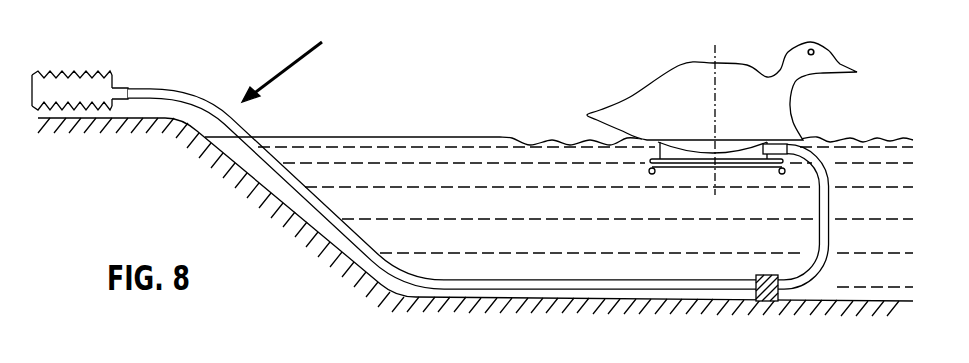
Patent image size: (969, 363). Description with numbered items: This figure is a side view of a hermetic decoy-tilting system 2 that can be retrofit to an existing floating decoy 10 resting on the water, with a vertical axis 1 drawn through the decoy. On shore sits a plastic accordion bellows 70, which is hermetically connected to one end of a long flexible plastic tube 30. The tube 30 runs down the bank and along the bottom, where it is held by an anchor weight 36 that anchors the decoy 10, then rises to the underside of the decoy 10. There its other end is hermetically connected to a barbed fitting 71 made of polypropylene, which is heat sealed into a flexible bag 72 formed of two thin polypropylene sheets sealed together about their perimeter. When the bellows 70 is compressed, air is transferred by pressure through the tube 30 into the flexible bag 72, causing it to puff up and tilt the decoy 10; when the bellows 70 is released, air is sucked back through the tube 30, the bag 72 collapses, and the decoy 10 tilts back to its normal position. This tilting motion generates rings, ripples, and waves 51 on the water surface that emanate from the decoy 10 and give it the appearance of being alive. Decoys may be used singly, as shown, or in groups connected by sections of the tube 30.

The vertical axis of decoy 1 is at (714, 122).
The hermetic decoy-tilting system 2 is at (290, 62).
The floating decoy 10 is at (674, 70).
The long flexible plastic tube 30 is at (151, 90).
The anchor weight 36 is at (756, 276).
The rings, ripples, and waves 51 is at (548, 142).
The plastic accordion bellows 70 is at (79, 72).
The barbed fitting 71 is at (788, 157).
The flexible bag 72 is at (658, 151).